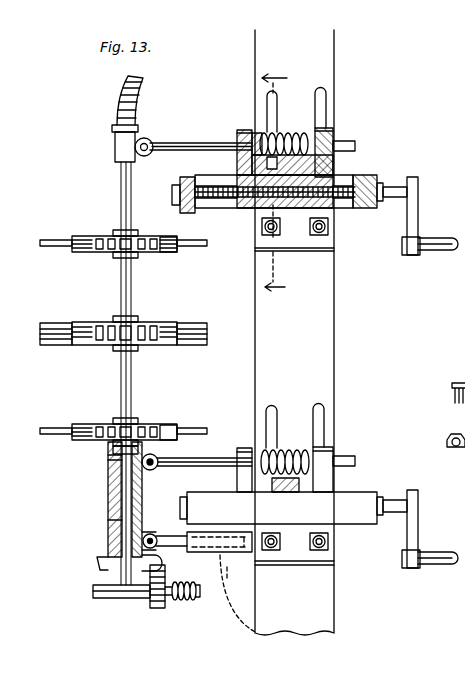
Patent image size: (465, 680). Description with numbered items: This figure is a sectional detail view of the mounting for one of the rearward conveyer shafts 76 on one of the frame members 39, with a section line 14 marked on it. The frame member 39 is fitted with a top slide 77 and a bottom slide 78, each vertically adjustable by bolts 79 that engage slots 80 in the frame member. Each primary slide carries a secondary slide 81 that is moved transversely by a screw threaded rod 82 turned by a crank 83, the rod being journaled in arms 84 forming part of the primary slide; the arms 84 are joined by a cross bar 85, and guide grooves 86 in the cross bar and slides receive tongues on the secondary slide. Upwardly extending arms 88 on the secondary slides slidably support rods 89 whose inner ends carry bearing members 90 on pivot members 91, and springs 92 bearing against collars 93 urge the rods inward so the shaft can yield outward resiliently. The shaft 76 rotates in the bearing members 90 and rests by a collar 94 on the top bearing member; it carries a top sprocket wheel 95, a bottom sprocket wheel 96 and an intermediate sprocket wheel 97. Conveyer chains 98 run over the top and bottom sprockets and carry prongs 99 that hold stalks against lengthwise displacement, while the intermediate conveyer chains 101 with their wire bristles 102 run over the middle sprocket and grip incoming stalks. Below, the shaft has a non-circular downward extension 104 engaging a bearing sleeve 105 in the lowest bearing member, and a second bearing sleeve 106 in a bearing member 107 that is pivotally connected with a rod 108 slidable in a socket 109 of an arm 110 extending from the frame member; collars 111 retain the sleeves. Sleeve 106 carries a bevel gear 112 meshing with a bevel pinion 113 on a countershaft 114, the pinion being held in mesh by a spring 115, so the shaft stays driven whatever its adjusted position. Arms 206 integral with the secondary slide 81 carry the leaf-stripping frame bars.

The section line 14 is at (274, 185).
The frame member 39 is at (325, 340).
The shaft 76 is at (132, 295).
The top slide 77 is at (330, 227).
The bottom slide 78 is at (330, 542).
The bolts 79 is at (328, 230).
The slots 80 is at (318, 92).
The secondary slide 81 is at (248, 210).
The screw threaded rod 82 is at (372, 174).
The crank 83 is at (419, 212).
The arms 84 is at (180, 166).
The cross bar 85 is at (362, 492).
The guide grooves 86 is at (256, 131).
The upwardly extending arms 88 is at (360, 446).
The rods 89 is at (198, 142).
The bearing members 90 is at (113, 140).
The pivot members 91 is at (148, 138).
The springs 92 is at (292, 132).
The collars 93 is at (256, 130).
The collar 94 is at (114, 128).
The top sprocket wheel 95 is at (72, 235).
The bottom sprocket wheel 96 is at (106, 424).
The intermediate sprocket wheel 97 is at (90, 322).
The conveyer chains 98 is at (168, 252).
The prongs 99 is at (200, 246).
The conveyer chains 101 is at (180, 322).
The bristles 102 is at (50, 346).
The downward extension 104 is at (108, 498).
The bearing sleeve 105 is at (110, 455).
The bearing sleeve 106 is at (108, 525).
The bearing member 107 is at (108, 552).
The rod 108 is at (176, 548).
The socket 109 is at (229, 556).
The arm 110 is at (216, 556).
The collars 111 is at (144, 528).
The bevel gear 112 is at (100, 570).
The bevel pinion 113 is at (162, 610).
The countershaft 114 is at (130, 600).
The spring 115 is at (190, 600).
The arms 206 is at (356, 140).